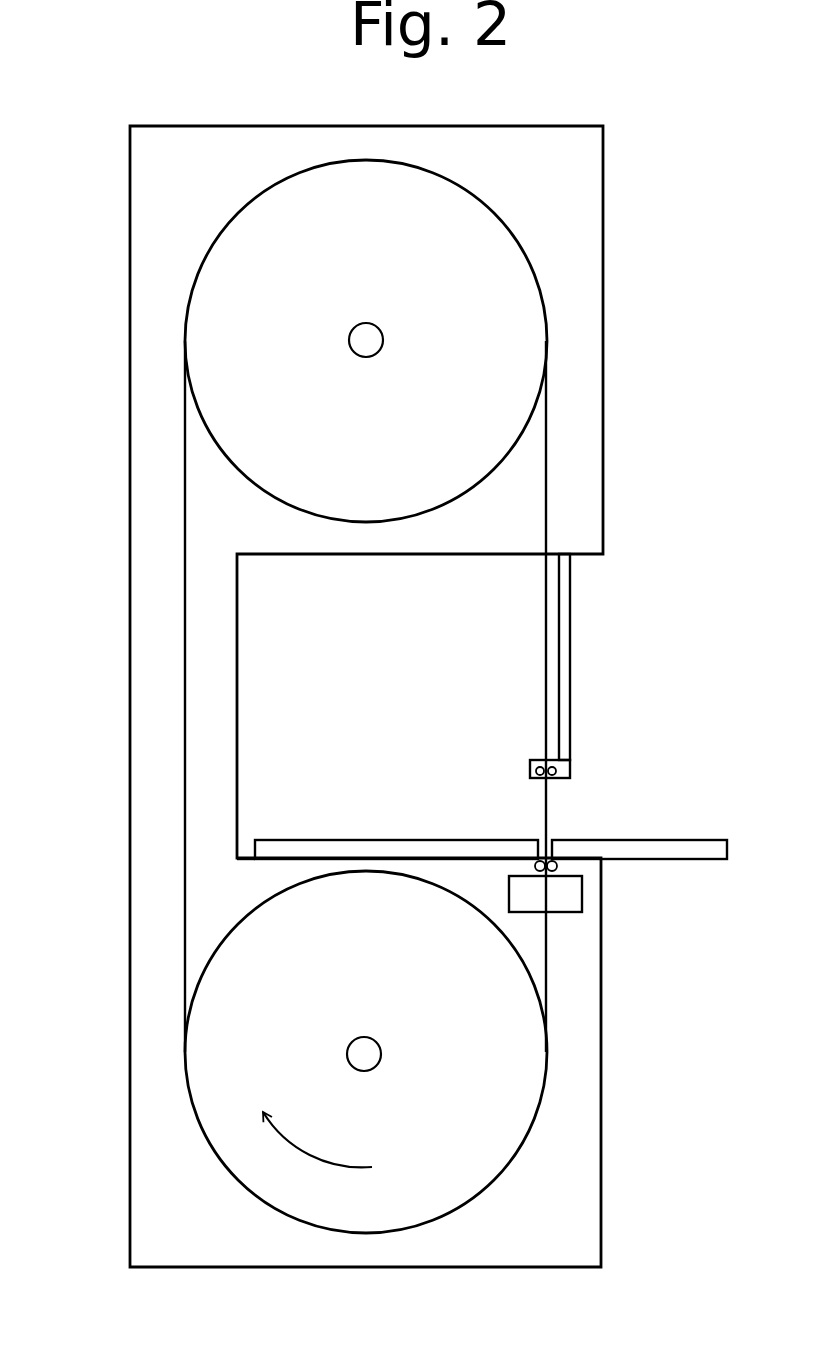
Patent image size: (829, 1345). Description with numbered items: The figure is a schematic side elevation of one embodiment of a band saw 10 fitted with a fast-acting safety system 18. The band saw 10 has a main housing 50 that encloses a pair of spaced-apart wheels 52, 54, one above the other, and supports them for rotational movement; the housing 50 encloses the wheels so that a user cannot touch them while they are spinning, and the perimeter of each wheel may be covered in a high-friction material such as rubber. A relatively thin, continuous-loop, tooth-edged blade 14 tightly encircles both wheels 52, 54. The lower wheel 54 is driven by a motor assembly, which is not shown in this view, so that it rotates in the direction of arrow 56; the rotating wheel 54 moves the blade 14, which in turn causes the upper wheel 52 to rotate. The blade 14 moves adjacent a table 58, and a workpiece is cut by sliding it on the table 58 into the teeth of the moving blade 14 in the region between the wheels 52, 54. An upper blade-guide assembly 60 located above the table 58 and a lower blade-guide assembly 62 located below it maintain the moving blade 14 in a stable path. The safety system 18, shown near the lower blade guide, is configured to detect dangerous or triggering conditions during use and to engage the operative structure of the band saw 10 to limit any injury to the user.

The band saw 10 is at (652, 260).
The blade 14 is at (548, 805).
The safety system 18 is at (565, 912).
The main housing 50 is at (604, 390).
The wheel 52 is at (366, 341).
The wheel 54 is at (366, 1052).
The arrow 56 is at (322, 1162).
The table 58 is at (670, 840).
The upper blade-guide assembly 60 is at (570, 722).
The lower blade-guide assembly 62 is at (587, 868).